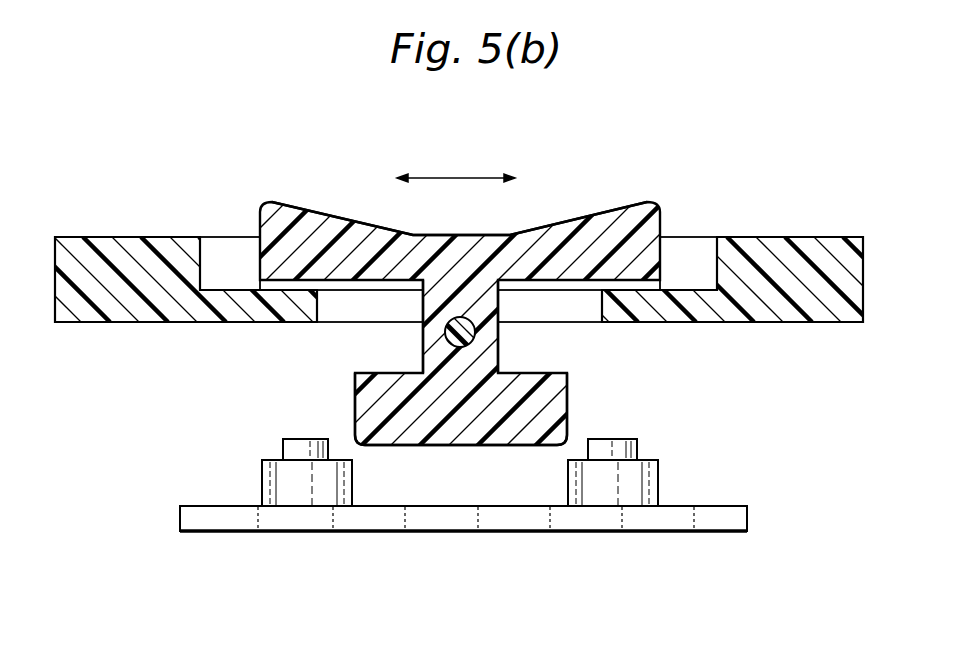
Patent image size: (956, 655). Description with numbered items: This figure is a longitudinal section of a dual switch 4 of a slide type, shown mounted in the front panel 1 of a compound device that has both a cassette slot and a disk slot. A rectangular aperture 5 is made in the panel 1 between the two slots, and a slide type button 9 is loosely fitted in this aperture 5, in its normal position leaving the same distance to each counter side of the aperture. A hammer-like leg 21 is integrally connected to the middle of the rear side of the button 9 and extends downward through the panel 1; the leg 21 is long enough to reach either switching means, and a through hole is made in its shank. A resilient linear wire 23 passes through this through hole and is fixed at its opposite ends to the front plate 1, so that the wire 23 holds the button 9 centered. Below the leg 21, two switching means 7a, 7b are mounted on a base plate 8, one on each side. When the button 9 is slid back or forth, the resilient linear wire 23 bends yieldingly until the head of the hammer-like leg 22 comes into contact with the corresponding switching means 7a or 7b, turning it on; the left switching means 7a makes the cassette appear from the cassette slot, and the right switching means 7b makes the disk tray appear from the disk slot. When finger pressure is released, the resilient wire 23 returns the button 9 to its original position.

The front panel 1 is at (763, 242).
The dual switch 4 is at (440, 304).
The rectangular aperture 5 is at (233, 260).
The left switching means 7a is at (302, 452).
The right switching means 7b is at (608, 442).
The base plate 8 is at (584, 524).
The slide type button 9 is at (588, 216).
The hammer-like leg 21 is at (423, 340).
The head of the hammer-like leg 22 is at (432, 432).
The resilient linear wire 23 is at (474, 335).